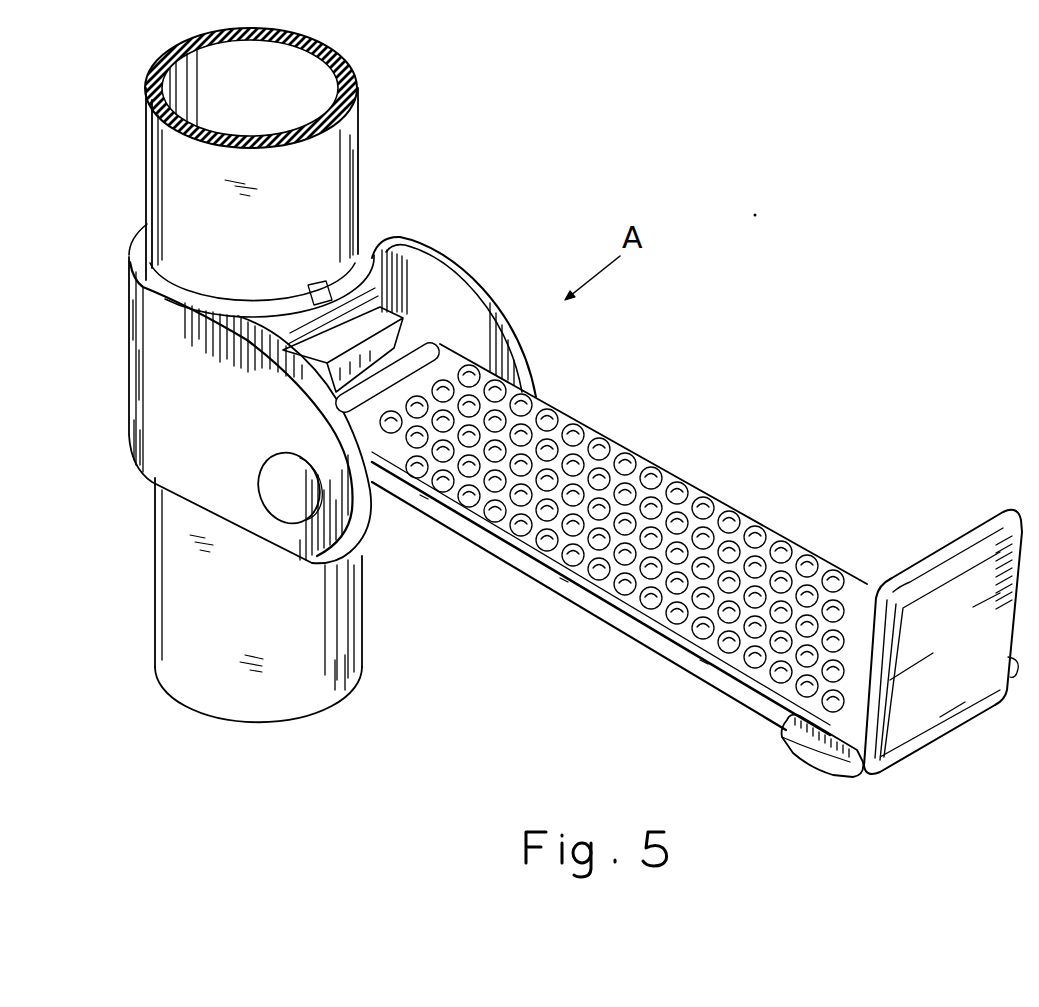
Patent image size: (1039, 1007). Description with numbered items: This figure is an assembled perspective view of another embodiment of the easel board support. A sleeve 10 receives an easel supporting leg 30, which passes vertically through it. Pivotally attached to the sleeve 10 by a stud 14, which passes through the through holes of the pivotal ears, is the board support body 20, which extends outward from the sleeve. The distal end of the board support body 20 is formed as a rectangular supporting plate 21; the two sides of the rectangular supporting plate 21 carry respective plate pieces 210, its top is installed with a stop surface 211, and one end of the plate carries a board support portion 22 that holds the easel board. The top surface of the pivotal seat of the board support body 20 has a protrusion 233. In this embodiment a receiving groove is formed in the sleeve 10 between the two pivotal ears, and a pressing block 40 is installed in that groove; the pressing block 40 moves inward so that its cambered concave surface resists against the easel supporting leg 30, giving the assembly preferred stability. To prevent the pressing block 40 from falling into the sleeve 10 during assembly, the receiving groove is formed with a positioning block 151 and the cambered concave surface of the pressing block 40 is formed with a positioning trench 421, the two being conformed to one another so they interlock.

The sleeve 10 is at (130, 367).
The stud 14 is at (275, 478).
The positioning block 151 is at (307, 284).
The board support body 20 is at (512, 558).
The rectangular supporting plate 21 is at (663, 657).
The board support portion 22 is at (967, 542).
The easel supporting leg 30 is at (160, 589).
The pressing block 40 is at (400, 335).
The plate piece 210 is at (813, 760).
The stop surface 211 is at (650, 470).
The protrusion 233 is at (318, 400).
The positioning trench 421 is at (370, 252).